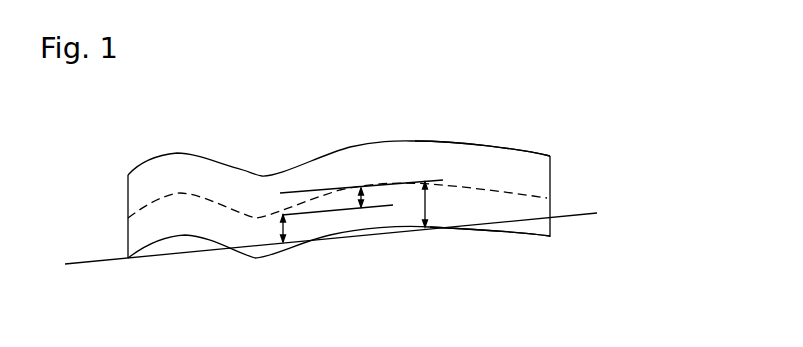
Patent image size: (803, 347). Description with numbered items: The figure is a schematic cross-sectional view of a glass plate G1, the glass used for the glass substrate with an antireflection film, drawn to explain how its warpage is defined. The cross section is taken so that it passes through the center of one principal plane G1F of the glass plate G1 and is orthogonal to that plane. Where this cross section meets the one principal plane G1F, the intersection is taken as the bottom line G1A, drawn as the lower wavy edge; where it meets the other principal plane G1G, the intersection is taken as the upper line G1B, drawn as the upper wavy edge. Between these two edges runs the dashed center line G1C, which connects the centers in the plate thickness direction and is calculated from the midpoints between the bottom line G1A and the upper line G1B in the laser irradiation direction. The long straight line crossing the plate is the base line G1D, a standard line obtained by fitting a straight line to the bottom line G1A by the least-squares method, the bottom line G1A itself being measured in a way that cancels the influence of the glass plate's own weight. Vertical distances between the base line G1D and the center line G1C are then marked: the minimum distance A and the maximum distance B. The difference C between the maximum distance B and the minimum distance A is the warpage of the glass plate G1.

The glass plate G1 is at (124, 121).
The bottom line G1A is at (254, 258).
The upper line G1B is at (243, 169).
The center line G1C is at (181, 193).
The base line G1D is at (576, 212).
The one principal plane G1F is at (531, 236).
The other principal plane G1G is at (520, 148).
The minimum distance A is at (295, 228).
The maximum distance B is at (436, 204).
The difference C is at (373, 197).